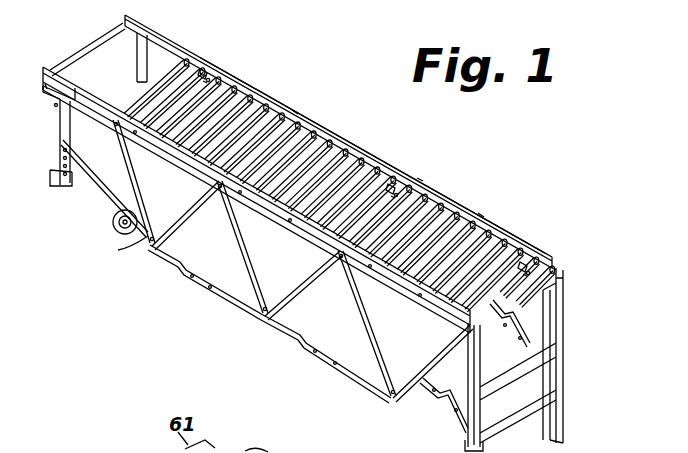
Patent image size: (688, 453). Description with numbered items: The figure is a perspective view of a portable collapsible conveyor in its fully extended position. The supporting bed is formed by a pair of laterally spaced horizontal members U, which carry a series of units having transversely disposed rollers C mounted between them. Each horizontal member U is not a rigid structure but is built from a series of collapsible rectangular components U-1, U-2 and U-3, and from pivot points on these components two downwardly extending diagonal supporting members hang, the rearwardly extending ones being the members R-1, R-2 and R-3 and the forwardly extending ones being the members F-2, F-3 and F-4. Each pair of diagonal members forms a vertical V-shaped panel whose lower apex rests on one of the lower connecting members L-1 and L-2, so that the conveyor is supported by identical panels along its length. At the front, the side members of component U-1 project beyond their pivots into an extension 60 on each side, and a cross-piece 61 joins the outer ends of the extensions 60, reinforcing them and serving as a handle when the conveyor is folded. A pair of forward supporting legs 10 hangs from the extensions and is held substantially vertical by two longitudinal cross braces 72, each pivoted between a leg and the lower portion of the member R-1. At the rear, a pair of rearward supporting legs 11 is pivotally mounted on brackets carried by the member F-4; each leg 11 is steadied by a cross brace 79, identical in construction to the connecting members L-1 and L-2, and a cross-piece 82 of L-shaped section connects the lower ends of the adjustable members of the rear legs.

The forward supporting legs 10 is at (57, 118).
The rearward supporting legs 11 is at (566, 305).
The extension 60 is at (166, 37).
The cross-piece 61 is at (83, 55).
The cross braces 72 is at (99, 178).
The cross brace 79 is at (447, 410).
The cross-piece 82 is at (522, 406).
The rollers C is at (203, 72).
The horizontal members U is at (298, 246).
The collapsible rectangular component U-1 is at (236, 68).
The collapsible rectangular component U-2 is at (330, 123).
The collapsible rectangular component U-3 is at (455, 201).
The rearwardly extending diagonal supporting member R-1 is at (130, 184).
The rearwardly extending diagonal supporting member R-2 is at (233, 249).
The rearwardly extending diagonal supporting member R-3 is at (350, 290).
The forwardly extending diagonal supporting member F-2 is at (160, 228).
The forwardly extending diagonal supporting member F-3 is at (293, 298).
The forwardly extending diagonal supporting member F-4 is at (432, 354).
The lower connecting member L-1 is at (172, 272).
The lower connecting member L-2 is at (315, 348).